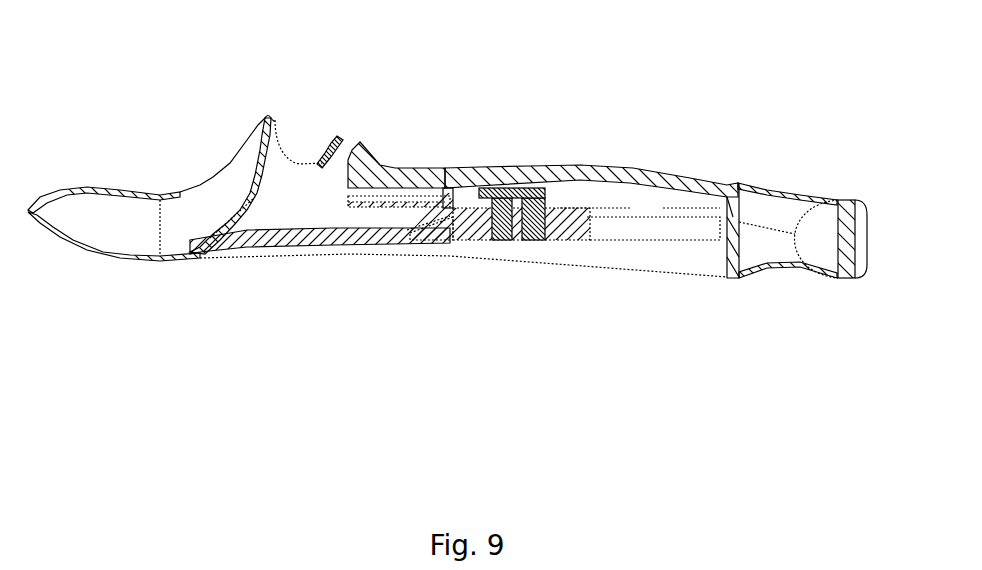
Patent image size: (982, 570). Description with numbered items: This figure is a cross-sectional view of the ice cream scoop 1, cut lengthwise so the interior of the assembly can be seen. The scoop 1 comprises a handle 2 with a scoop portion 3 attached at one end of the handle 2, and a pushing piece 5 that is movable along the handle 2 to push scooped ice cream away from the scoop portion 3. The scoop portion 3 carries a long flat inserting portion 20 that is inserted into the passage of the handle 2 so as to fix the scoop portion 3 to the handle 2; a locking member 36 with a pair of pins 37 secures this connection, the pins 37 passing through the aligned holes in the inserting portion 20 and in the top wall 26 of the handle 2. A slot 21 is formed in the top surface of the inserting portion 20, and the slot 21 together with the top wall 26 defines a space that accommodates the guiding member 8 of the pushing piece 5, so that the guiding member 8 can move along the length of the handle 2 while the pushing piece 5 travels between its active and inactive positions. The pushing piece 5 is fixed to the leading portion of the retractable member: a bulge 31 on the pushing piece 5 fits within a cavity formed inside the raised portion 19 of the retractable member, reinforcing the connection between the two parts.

The scoop 1 is at (578, 118).
The handle 2 is at (643, 168).
The scoop portion 3 is at (127, 258).
The pushing piece 5 is at (290, 185).
The guiding member 8 is at (378, 222).
The raised portion 19 is at (363, 153).
The inserting portion 20 is at (480, 222).
The slot 21 is at (428, 225).
The top wall 26 is at (407, 205).
The bulge 31 is at (342, 167).
The locking member 36 is at (516, 188).
The pins 37 is at (503, 228).